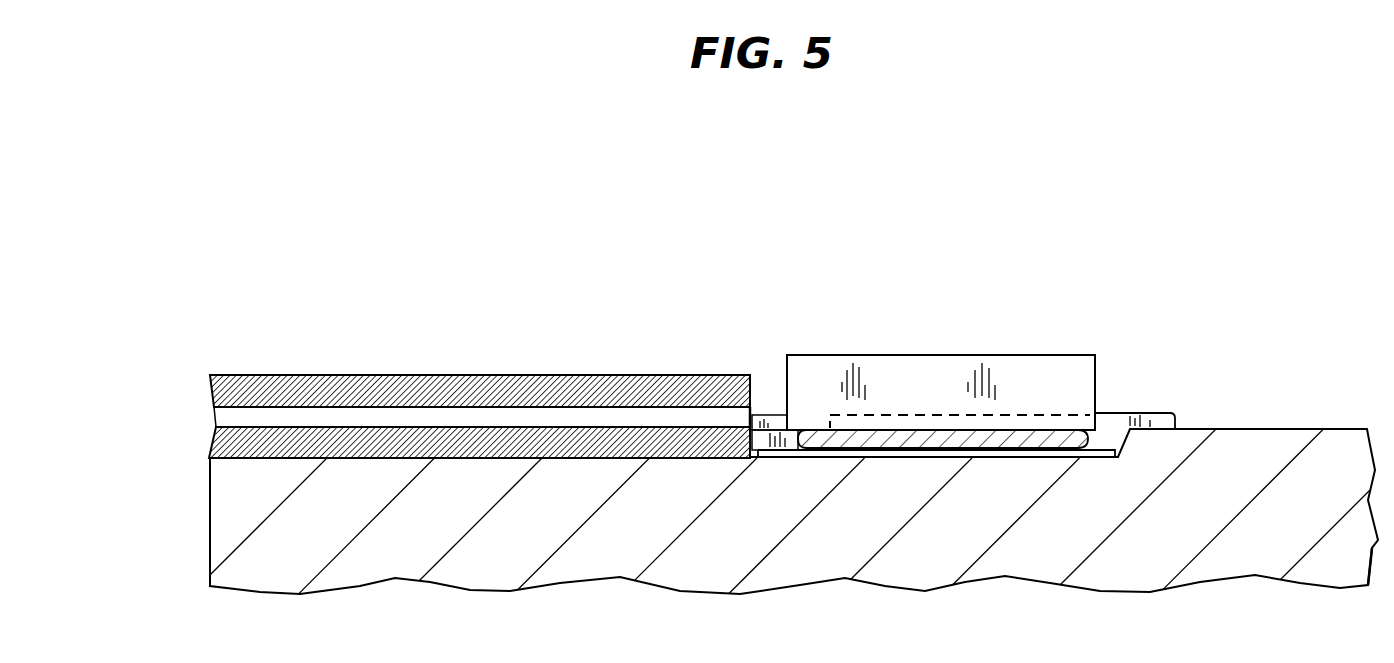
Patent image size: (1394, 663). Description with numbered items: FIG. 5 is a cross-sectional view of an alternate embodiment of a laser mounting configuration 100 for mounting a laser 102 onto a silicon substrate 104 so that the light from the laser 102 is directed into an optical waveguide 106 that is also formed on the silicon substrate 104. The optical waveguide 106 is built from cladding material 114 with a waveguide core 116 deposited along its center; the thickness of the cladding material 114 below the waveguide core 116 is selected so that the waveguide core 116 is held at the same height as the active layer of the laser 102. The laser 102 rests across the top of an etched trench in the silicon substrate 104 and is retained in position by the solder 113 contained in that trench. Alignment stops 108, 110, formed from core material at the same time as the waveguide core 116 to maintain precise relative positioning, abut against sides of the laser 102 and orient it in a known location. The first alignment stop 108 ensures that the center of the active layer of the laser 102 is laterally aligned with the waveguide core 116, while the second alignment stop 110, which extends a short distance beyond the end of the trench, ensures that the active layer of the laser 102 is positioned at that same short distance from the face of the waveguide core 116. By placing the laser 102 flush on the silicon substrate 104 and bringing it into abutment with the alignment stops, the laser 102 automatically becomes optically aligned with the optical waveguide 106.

The laser mounting configuration 100 is at (897, 240).
The laser 102 is at (1030, 354).
The silicon substrate 104 is at (933, 525).
The optical waveguide 106 is at (276, 374).
The first alignment stop 108 is at (1097, 413).
The second alignment stop 110 is at (817, 308).
The solder 113 is at (1048, 442).
The cladding material 114 is at (222, 443).
The waveguide core 116 is at (222, 417).